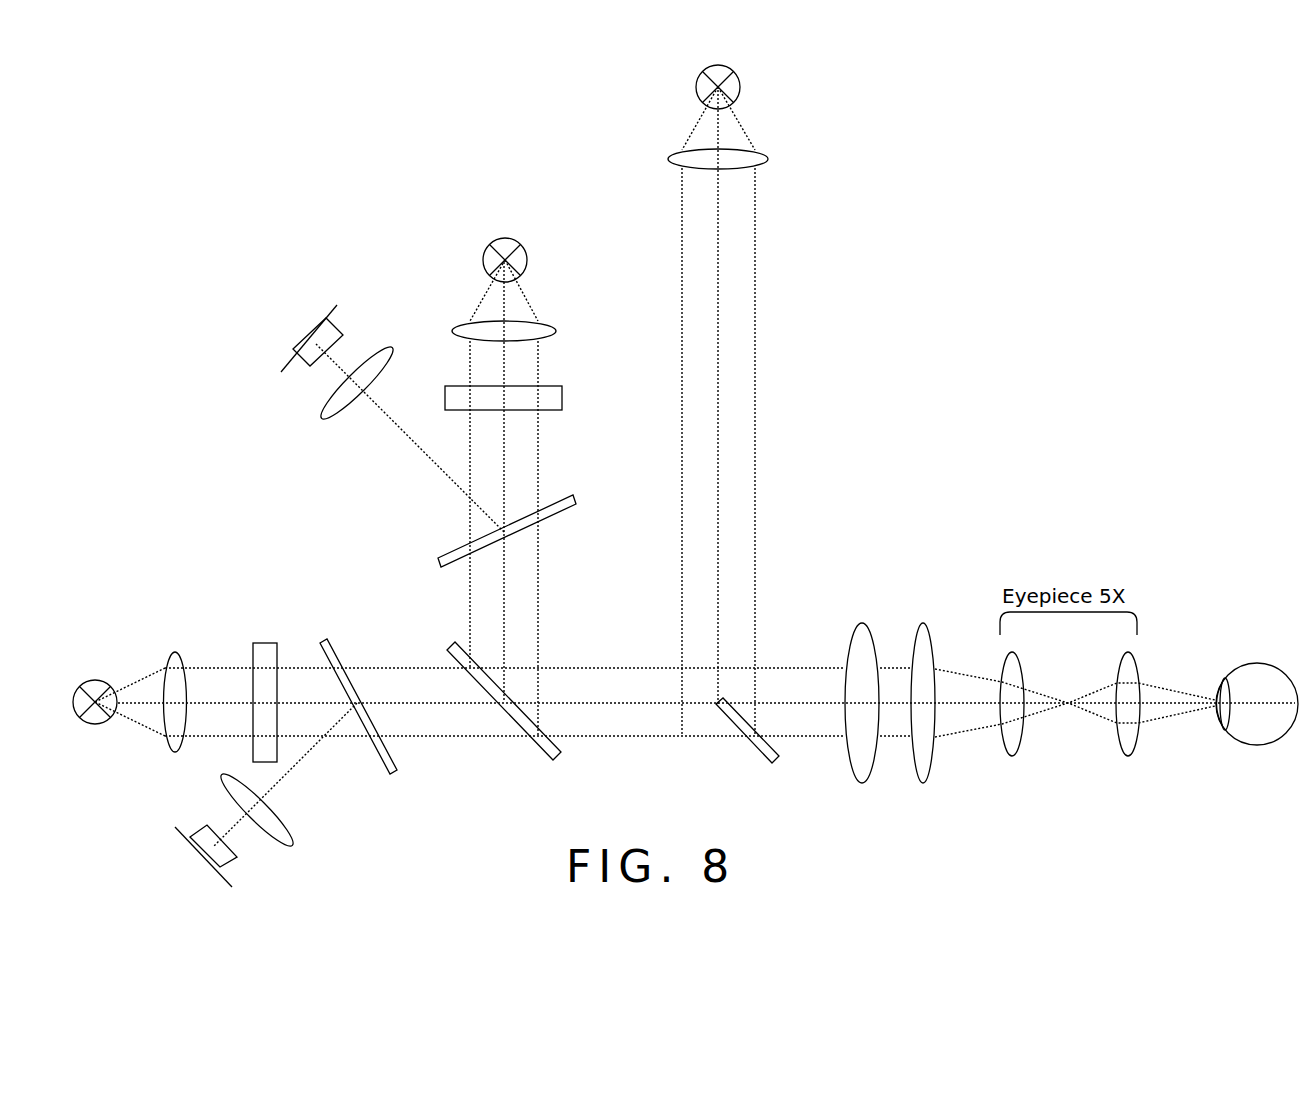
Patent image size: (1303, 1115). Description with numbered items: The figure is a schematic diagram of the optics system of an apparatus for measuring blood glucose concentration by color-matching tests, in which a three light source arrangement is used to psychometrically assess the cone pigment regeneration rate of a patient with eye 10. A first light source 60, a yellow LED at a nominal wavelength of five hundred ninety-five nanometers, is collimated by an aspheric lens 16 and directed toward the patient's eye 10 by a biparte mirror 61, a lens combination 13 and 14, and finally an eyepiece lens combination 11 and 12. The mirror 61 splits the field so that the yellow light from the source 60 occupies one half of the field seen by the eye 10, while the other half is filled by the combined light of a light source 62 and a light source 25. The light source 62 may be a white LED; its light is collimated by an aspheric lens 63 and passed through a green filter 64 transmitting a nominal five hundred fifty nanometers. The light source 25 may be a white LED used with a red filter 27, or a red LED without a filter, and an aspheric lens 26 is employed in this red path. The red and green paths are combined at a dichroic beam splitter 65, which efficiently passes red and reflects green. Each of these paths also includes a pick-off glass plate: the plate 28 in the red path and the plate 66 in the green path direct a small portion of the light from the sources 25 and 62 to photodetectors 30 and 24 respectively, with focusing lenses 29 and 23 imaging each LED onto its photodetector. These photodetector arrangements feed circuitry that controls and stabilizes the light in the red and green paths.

The eye 10 is at (1258, 745).
The eyepiece lens 11 is at (1128, 756).
The eyepiece lens 12 is at (1012, 756).
The lens 13 is at (923, 783).
The lens 14 is at (862, 783).
The aspheric lens 16 is at (767, 162).
The focusing lens 23 is at (323, 418).
The photodetector 24 is at (290, 357).
The light source 25 is at (99, 680).
The aspheric lens 26 is at (178, 652).
The red filter 27 is at (266, 643).
The pick-off glass plate 28 is at (323, 641).
The focusing lens 29 is at (290, 828).
The photodetector 30 is at (225, 867).
The first light source 60 is at (737, 92).
The biparte mirror 61 is at (760, 753).
The light source 62 is at (527, 258).
The aspheric lens 63 is at (555, 330).
The green filter 64 is at (557, 398).
The dichroic beam splitter 65 is at (540, 747).
The pick-off glass plate 66 is at (575, 500).